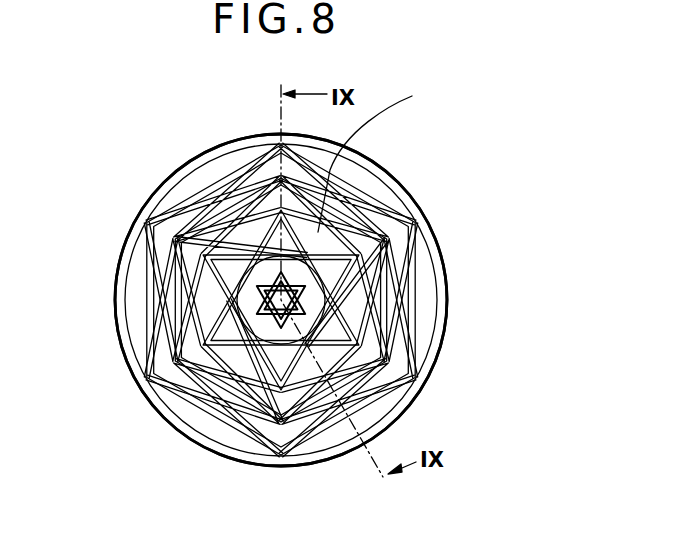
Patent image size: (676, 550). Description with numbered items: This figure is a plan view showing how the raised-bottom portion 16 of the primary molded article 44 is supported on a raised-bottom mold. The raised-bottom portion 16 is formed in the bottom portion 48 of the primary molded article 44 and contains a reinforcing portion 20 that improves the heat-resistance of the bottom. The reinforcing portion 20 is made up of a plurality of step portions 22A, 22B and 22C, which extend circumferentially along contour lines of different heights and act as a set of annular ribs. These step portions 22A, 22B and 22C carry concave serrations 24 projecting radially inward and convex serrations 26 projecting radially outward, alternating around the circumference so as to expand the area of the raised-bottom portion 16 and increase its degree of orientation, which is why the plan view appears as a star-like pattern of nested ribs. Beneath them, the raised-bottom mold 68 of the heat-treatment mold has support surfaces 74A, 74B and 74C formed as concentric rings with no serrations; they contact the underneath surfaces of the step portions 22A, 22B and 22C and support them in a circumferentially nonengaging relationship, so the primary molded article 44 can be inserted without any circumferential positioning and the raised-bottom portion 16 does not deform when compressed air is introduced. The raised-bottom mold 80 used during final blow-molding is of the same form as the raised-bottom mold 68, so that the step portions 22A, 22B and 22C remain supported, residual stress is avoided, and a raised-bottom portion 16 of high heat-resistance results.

The raised-bottom portion 16 is at (413, 305).
The reinforcing portion 20 is at (352, 185).
The step portion 22A is at (195, 283).
The step portion 22B is at (185, 318).
The step portion 22C is at (170, 365).
The concave serrations 24 is at (215, 397).
The convex serrations 26 is at (400, 233).
The primary molded article 44 is at (446, 357).
The bottom portion of the primary molded article 48 is at (312, 447).
The raised-bottom mold 68 is at (410, 397).
The raised-bottom mold 80 is at (333, 300).
The support surface 74A is at (388, 152).
The support surface 74B is at (405, 320).
The support surface 74C is at (420, 285).